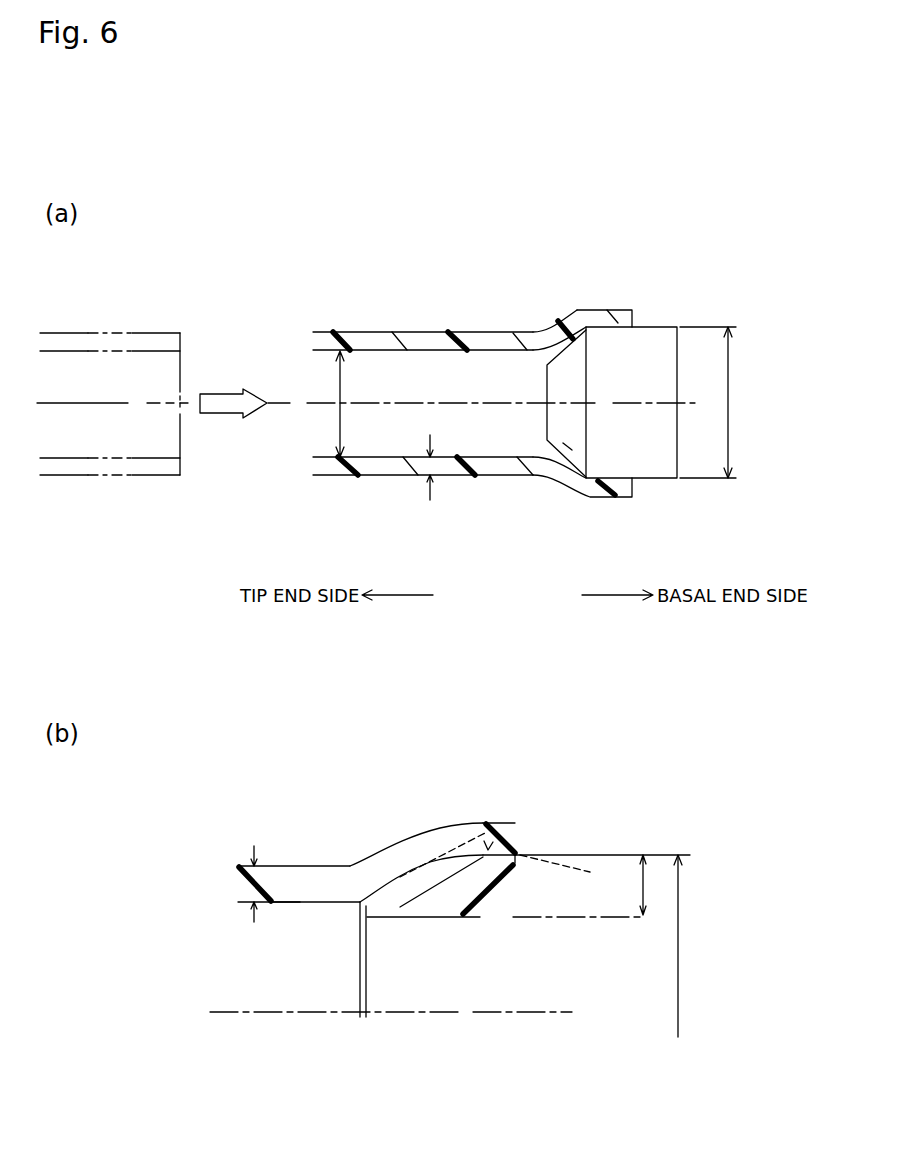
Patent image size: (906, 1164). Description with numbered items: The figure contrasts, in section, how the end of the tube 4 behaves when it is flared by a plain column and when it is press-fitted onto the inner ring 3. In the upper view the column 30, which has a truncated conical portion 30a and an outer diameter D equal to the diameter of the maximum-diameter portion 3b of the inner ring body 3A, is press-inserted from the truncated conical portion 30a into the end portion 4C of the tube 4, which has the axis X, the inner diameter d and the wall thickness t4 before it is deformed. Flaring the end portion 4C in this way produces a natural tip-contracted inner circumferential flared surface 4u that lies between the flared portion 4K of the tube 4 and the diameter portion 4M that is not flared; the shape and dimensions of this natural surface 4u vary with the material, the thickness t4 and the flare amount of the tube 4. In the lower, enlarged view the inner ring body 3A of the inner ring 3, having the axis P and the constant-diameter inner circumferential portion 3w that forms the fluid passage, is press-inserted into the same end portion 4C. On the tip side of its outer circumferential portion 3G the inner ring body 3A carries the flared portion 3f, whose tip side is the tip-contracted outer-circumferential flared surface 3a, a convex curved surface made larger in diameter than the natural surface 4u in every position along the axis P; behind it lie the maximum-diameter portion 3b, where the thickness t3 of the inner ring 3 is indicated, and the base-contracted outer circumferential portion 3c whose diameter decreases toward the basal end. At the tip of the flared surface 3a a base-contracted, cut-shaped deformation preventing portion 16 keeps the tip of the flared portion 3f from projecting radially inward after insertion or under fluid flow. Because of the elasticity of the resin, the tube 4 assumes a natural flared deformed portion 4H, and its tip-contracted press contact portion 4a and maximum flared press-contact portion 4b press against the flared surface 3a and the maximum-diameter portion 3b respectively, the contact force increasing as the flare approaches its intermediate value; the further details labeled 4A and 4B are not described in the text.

The tube 4 is at (118, 333).
The diameter portion of the tube 4M is at (480, 338).
The natural flared deformed portion of the tube 4H is at (560, 330).
The flared portion of the tube 4K is at (617, 317).
The end portion of the tube 4C is at (590, 493).
The natural tip-contracted inner circumferential flared surface 4u is at (573, 337).
The column 30 is at (653, 477).
The truncated conical portion 30a is at (568, 451).
The axis P is at (640, 402).
The axis X is at (107, 407).
The outer diameter D is at (625, 682).
The inner diameter d is at (325, 404).
The thickness t4 is at (328, 691).
The thickness t3 is at (630, 885).
The inner ring 3 is at (478, 916).
The tip-contracted outer-circumferential flared surface 3a is at (450, 872).
The maximum-diameter portion 3b is at (515, 857).
The base-contracted outer circumferential portion 3c is at (585, 868).
The flared portion 3f is at (407, 867).
The inner circumferential portion 3w is at (400, 912).
The inner ring body 3A is at (448, 915).
The outer circumferential portion 3G is at (484, 836).
The tip-contracted press contact portion 4a is at (390, 853).
The straight portion of tube 4A is at (300, 903).
The maximum flared press-contact portion 4b is at (490, 867).
The bent portion of tube 4B is at (467, 832).
The deformation preventing portion 16 is at (360, 908).